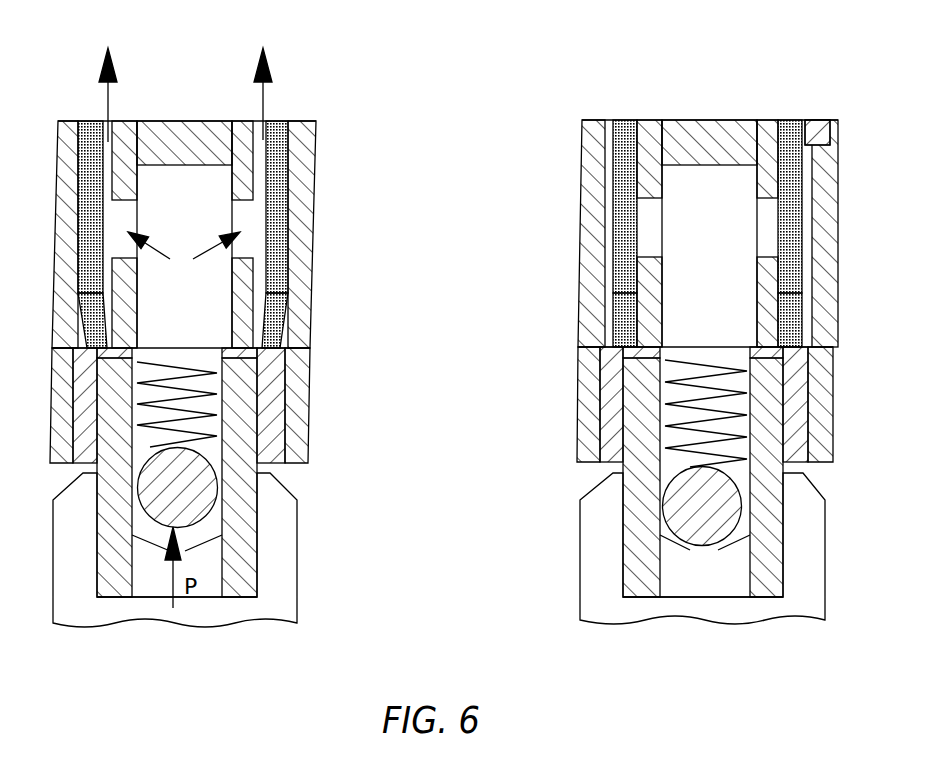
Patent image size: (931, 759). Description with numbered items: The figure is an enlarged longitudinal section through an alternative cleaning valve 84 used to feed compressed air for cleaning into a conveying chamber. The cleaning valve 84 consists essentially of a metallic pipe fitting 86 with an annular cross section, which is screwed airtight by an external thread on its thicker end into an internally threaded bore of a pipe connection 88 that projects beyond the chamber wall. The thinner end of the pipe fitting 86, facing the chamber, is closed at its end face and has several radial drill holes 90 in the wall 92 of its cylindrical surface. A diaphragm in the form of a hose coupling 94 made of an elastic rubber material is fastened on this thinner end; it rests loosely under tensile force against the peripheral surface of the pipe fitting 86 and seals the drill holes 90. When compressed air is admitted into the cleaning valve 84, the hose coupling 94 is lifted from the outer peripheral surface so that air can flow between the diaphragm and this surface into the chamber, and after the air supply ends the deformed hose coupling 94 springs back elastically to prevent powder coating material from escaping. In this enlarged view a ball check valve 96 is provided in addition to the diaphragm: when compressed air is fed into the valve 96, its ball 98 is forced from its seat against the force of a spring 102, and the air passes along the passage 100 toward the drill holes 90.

The cleaning valve 84 is at (570, 118).
The pipe fitting 86 is at (272, 438).
The pipe connection 88 is at (300, 397).
The radial drill holes 90 is at (290, 224).
The wall 92 is at (273, 320).
The hose coupling 94 is at (290, 157).
The ball check valve 96 is at (583, 478).
The ball 98 is at (195, 503).
The inlet passage 100 is at (205, 544).
The spring 102 is at (210, 400).